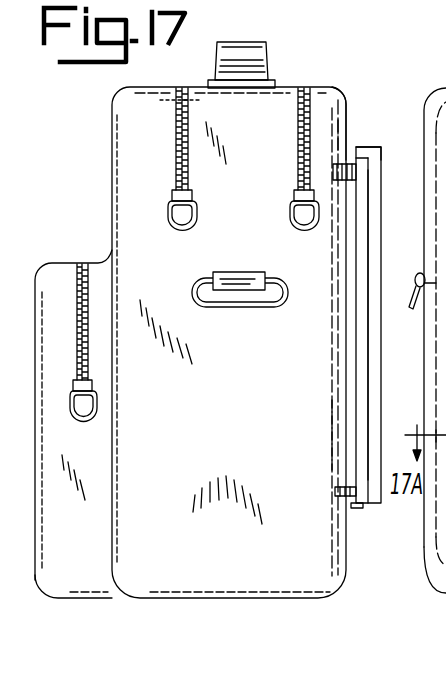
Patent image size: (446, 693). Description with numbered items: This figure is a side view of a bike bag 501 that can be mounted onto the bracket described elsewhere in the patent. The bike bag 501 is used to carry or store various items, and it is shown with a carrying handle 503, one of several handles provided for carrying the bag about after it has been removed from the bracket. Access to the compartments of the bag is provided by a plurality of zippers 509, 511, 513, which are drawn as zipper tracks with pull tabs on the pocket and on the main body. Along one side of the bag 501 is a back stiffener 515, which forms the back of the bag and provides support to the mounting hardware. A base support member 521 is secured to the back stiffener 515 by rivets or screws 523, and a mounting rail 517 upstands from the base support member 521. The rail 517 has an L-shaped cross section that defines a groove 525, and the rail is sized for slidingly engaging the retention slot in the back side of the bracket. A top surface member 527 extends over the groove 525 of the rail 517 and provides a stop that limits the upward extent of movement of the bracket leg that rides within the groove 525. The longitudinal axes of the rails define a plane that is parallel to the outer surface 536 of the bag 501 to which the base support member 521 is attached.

The bike bag 501 is at (240, 243).
The carrying handle 503 is at (218, 308).
The zipper 509 is at (88, 302).
The zipper 511 is at (188, 160).
The zipper 513 is at (298, 137).
The back stiffener 515 is at (340, 134).
The mounting rail 517 is at (382, 327).
The base support member 521 is at (358, 421).
The rivets or screws 523 is at (351, 177).
The groove 525 is at (362, 387).
The top surface member 527 is at (356, 147).
The outer surface 536 is at (346, 124).